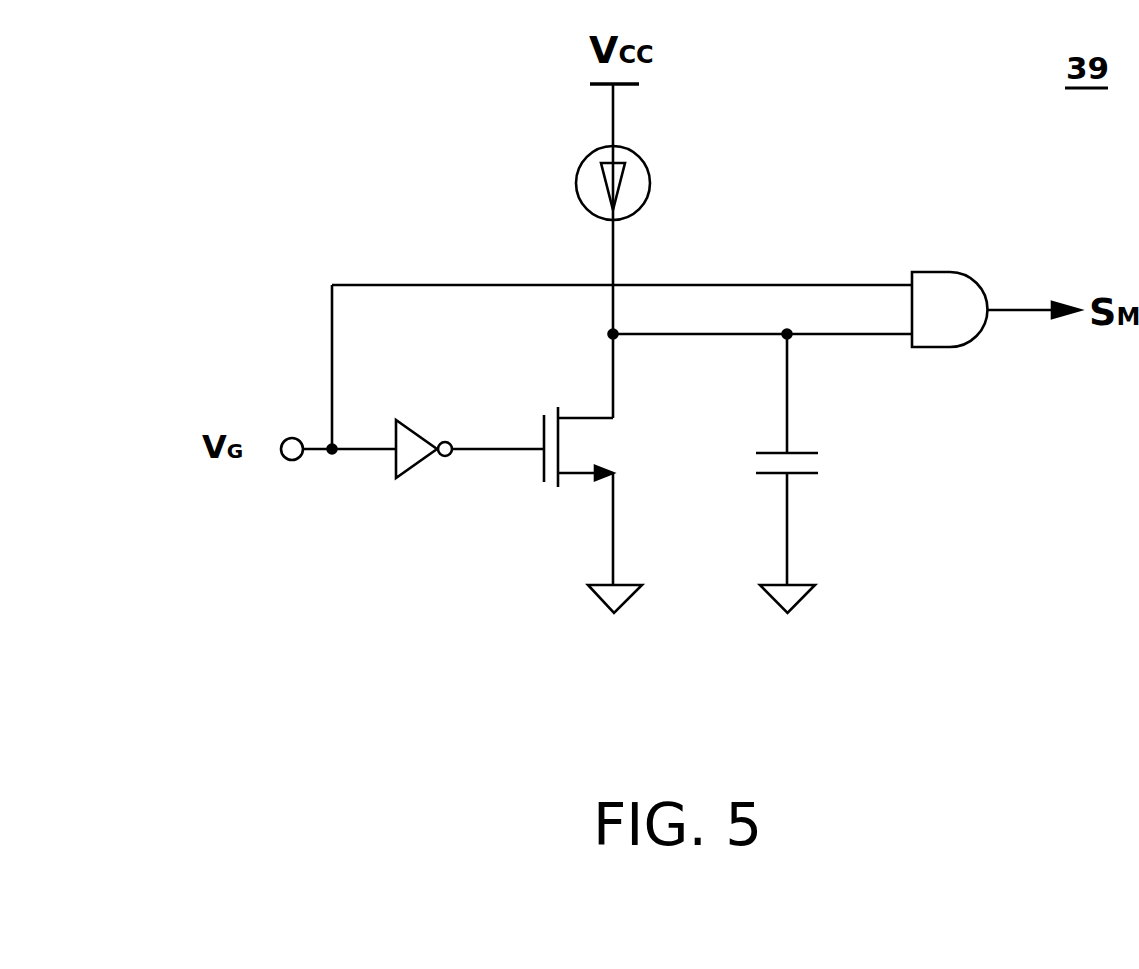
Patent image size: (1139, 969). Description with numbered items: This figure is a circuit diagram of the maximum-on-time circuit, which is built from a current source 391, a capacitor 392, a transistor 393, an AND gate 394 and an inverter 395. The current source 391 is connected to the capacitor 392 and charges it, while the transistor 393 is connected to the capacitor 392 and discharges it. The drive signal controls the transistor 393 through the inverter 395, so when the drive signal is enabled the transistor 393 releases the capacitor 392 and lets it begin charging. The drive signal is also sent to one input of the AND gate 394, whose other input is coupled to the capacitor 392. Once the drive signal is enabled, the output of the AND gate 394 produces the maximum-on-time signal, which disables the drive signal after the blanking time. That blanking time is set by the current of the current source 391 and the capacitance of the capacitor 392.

The current source 391 is at (652, 193).
The capacitor 392 is at (821, 465).
The transistor 393 is at (615, 446).
The AND gate 394 is at (945, 267).
The inverter 395 is at (422, 430).